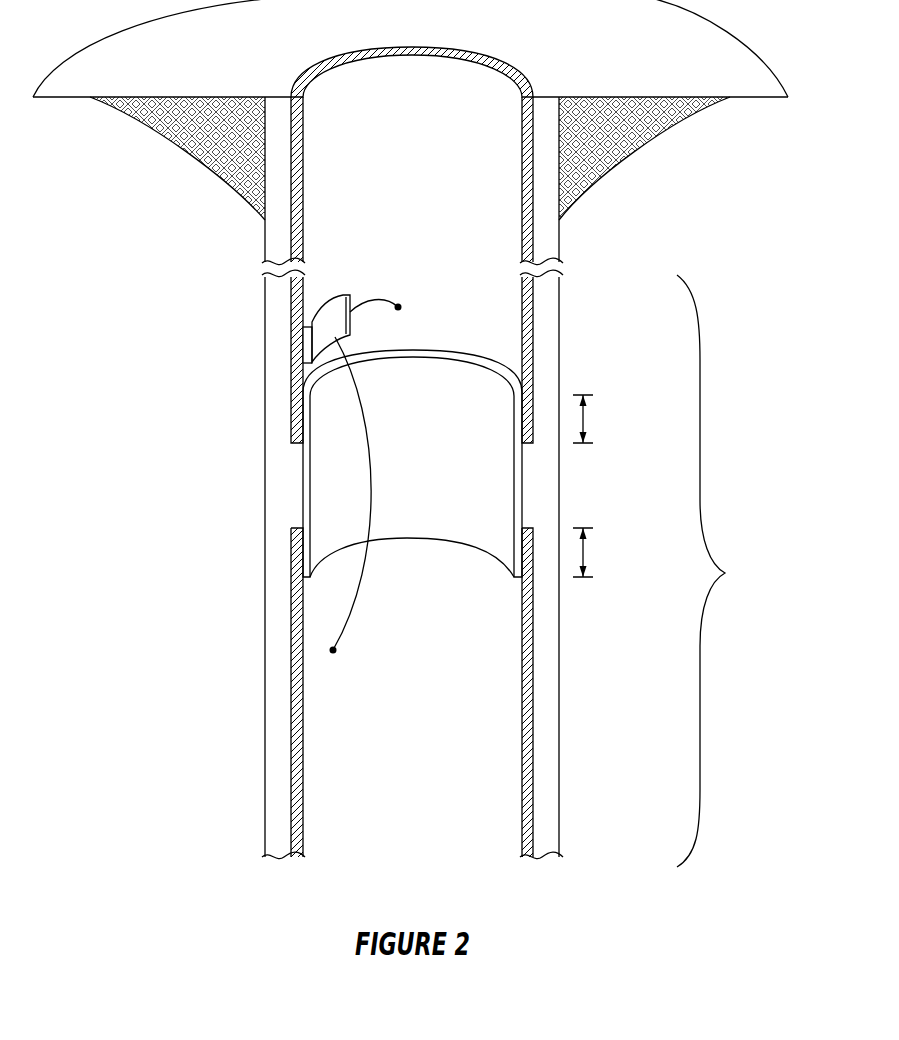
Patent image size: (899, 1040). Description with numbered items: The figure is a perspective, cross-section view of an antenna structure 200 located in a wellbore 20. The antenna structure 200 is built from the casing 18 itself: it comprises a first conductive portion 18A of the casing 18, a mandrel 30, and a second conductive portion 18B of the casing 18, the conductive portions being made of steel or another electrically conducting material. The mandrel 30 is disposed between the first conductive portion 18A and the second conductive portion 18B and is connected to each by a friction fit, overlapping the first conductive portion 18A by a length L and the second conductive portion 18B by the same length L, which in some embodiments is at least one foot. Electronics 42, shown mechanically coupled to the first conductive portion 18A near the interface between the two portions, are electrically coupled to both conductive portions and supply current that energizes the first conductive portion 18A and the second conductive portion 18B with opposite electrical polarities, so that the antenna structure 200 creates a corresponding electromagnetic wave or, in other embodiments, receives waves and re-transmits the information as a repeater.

The casing 18 is at (444, 453).
The first conductive portion 18A is at (535, 337).
The second conductive portion 18B is at (535, 663).
The wellbore 20 is at (263, 583).
The mandrel 30 is at (523, 493).
The electronics 42 is at (342, 295).
The overlap length L is at (588, 418).
The antenna structure 200 is at (723, 571).